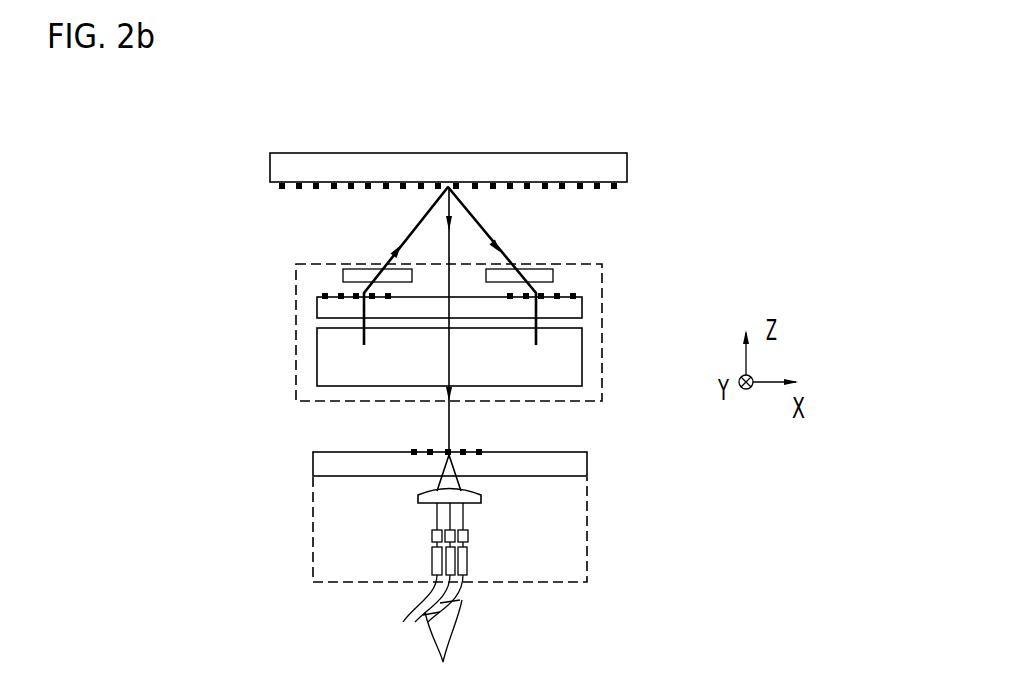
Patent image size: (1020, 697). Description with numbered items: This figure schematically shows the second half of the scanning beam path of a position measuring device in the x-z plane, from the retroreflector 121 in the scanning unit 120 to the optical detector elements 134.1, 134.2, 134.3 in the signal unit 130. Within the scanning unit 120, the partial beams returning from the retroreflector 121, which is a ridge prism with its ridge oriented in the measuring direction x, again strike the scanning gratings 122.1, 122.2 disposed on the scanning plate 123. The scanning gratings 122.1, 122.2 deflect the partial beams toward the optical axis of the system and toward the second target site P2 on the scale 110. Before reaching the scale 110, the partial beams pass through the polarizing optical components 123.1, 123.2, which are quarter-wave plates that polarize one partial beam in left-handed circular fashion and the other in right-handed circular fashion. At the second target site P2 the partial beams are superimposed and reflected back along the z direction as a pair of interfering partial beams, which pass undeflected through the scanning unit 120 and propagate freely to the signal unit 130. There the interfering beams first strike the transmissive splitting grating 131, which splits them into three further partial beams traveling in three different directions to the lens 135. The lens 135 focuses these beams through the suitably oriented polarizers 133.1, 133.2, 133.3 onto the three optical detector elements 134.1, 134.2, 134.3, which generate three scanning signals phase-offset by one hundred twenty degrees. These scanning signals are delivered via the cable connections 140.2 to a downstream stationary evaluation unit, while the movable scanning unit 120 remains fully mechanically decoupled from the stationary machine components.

The scale 110 is at (642, 167).
The second target site P2 is at (449, 186).
The scanning unit 120 is at (612, 307).
The retroreflector 121 is at (333, 358).
The scanning plate 123 is at (330, 307).
The scanning grating 122.1 is at (340, 293).
The scanning grating 122.2 is at (573, 292).
The polarizing optical component 123.1 is at (362, 275).
The polarizing optical component 123.2 is at (535, 273).
The signal unit 130 is at (596, 532).
The splitting grating 131 is at (480, 448).
The lens 135 is at (428, 489).
The polarizer 133.1 is at (432, 535).
The polarizer 133.2 is at (447, 532).
The polarizer 133.3 is at (467, 533).
The optical detector element 134.1 is at (433, 563).
The optical detector element 134.2 is at (450, 558).
The optical detector element 134.3 is at (463, 564).
The cable connection 140.2 is at (452, 636).